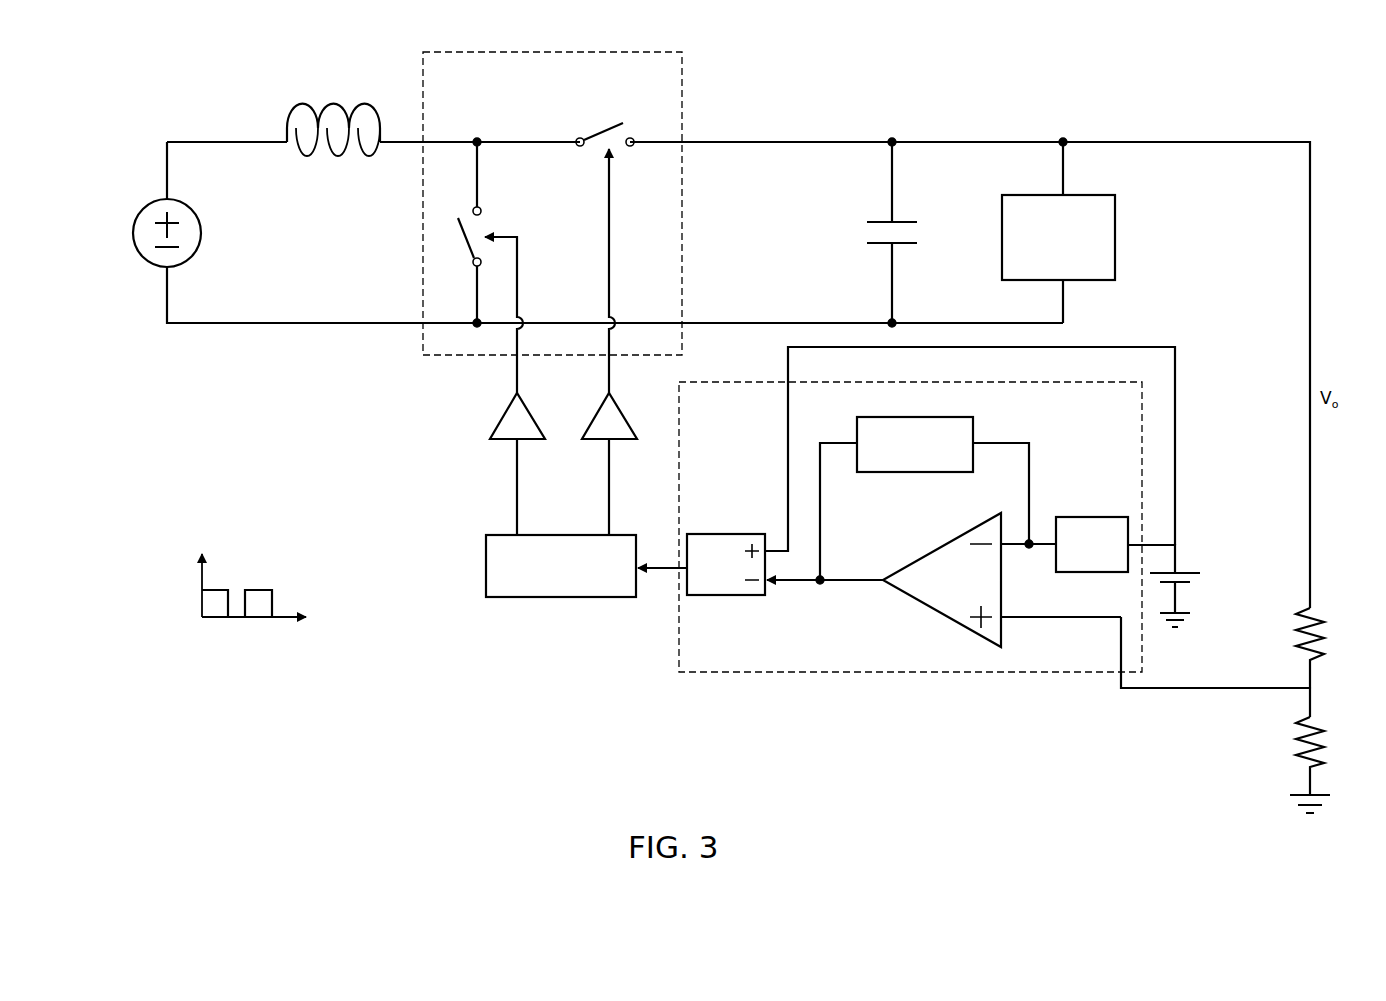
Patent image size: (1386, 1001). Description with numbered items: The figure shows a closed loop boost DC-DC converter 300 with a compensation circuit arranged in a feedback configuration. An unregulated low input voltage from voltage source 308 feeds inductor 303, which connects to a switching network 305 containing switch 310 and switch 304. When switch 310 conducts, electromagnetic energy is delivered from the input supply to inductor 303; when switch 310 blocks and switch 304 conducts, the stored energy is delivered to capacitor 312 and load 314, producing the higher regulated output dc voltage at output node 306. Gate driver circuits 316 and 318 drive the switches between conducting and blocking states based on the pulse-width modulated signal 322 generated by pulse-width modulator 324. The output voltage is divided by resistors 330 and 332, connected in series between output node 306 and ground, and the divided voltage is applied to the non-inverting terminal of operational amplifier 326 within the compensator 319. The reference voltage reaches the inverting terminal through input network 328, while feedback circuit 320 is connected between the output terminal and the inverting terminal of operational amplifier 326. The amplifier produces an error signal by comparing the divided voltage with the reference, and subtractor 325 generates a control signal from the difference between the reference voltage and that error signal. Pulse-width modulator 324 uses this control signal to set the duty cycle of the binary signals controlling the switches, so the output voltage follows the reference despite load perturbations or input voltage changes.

The closed loop boost DC-DC converter 300 is at (201, 409).
The inductor 303 is at (345, 107).
The switch 304 is at (605, 130).
The switching network 305 is at (510, 62).
The output node 306 is at (1063, 142).
The voltage source 308 is at (202, 238).
The switch 310 is at (460, 237).
The capacitor 312 is at (867, 233).
The load 314 is at (1104, 222).
The gate driver circuit 316 is at (495, 418).
The gate driver circuit 318 is at (652, 394).
The compensator 319 is at (1098, 382).
The feedback circuit 320 is at (955, 417).
The pulse-width modulated signal 322 is at (160, 591).
The pulse-width modulator 324 is at (489, 573).
The subtractor 325 is at (728, 595).
The operational amplifier 326 is at (928, 612).
The input network 328 is at (1125, 517).
The resistor 330 is at (1335, 628).
The resistor 332 is at (1335, 733).